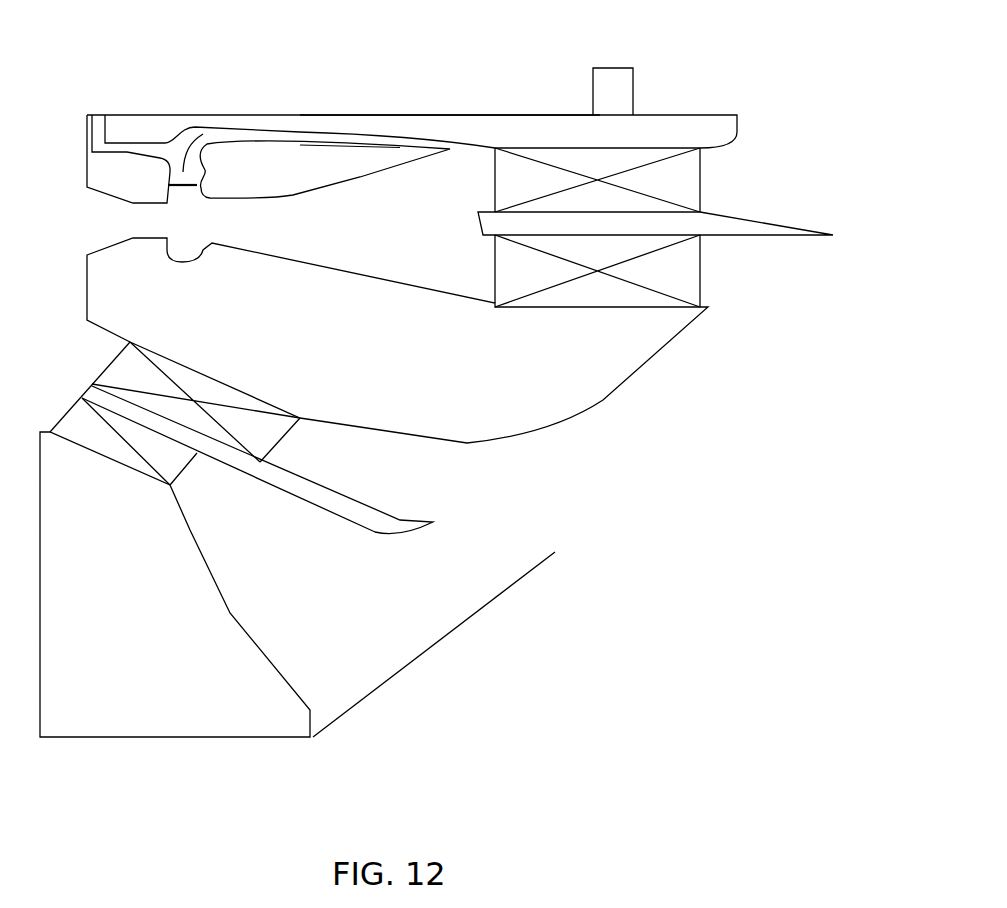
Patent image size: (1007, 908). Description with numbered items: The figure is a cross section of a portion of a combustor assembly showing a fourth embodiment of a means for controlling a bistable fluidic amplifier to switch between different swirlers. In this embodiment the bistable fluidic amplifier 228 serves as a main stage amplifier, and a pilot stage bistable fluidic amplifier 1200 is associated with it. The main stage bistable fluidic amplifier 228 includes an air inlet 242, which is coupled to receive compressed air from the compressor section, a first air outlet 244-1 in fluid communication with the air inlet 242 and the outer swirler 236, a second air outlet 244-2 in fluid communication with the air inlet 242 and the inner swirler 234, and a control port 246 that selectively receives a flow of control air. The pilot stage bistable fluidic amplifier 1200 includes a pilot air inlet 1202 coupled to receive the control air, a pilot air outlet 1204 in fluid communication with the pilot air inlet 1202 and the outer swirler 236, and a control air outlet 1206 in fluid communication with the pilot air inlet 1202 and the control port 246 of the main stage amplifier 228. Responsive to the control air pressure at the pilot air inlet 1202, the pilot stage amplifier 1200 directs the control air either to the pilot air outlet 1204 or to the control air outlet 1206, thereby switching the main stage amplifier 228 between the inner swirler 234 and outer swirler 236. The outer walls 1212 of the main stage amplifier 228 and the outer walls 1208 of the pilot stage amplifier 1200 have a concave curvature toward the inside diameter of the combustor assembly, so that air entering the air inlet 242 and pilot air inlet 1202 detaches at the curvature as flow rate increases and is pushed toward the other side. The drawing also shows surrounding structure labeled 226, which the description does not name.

The pilot stage bistable fluidic amplifier 1200 is at (313, 118).
The pilot air inlet 1202 is at (97, 114).
The pilot air outlet 1204 is at (450, 148).
The control air outlet 1206 is at (210, 132).
The outer walls 1208 is at (167, 142).
The outer walls 1212 is at (316, 189).
The housing 226 is at (678, 93).
The bistable fluidic amplifier 228 is at (327, 280).
The inner swirler 234 is at (701, 268).
The outer swirler 236 is at (701, 180).
The air inlet 242 is at (103, 222).
The first air outlet 244-1 is at (493, 182).
The second air outlet 244-2 is at (493, 272).
The control port 246 is at (186, 193).